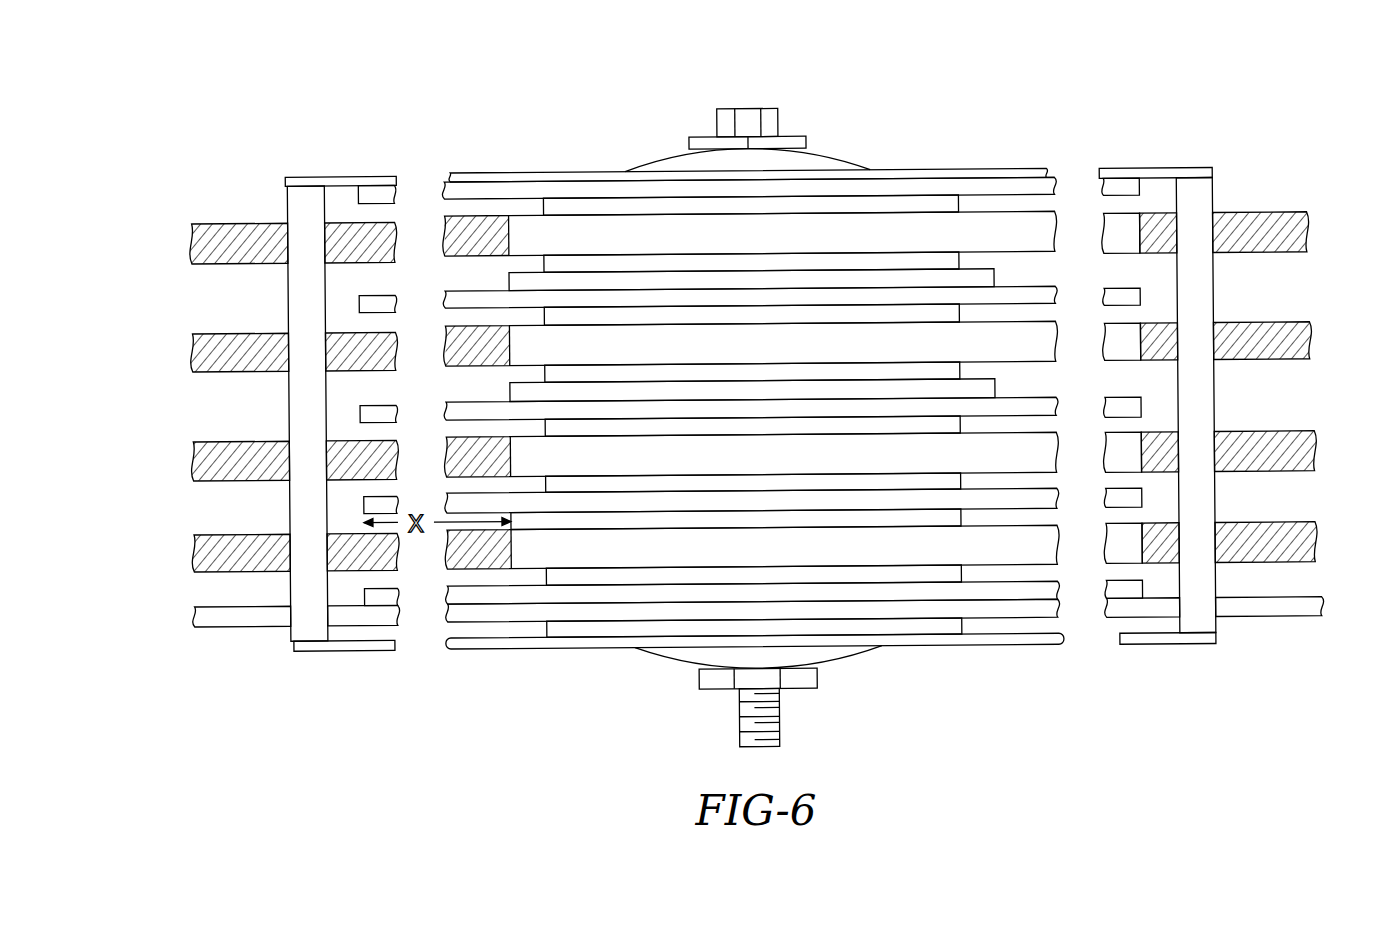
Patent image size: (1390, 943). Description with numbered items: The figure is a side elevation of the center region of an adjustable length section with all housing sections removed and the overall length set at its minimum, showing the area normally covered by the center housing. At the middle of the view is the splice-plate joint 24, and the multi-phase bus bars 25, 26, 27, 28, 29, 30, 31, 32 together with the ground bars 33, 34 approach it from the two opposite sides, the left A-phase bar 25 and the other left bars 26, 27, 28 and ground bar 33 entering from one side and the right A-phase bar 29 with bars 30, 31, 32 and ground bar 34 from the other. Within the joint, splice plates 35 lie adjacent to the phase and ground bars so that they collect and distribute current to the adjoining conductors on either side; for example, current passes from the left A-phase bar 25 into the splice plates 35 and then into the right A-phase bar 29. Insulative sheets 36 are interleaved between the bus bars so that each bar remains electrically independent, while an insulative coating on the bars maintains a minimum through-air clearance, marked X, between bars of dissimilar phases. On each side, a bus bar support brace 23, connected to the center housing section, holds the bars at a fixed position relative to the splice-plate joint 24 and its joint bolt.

The bus bar support brace 23 is at (305, 193).
The splice-plate joint 24 is at (1205, 100).
The left A-phase bar 25 is at (233, 236).
The multi-phase bus bar 26 is at (193, 353).
The multi-phase bus bar 27 is at (192, 465).
The multi-phase bus bar 28 is at (202, 549).
The right A-phase bar 29 is at (1303, 235).
The multi-phase bus bar 30 is at (1303, 350).
The multi-phase bus bar 31 is at (1298, 454).
The multi-phase bus bar 32 is at (1303, 545).
The ground bar 33 is at (242, 621).
The ground bar 34 is at (1292, 617).
The splice plate 35 is at (943, 267).
The insulative sheet 36 is at (643, 392).